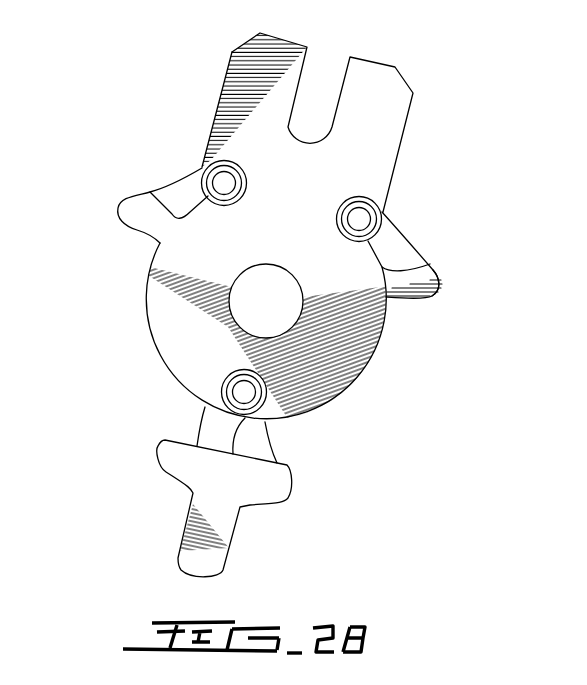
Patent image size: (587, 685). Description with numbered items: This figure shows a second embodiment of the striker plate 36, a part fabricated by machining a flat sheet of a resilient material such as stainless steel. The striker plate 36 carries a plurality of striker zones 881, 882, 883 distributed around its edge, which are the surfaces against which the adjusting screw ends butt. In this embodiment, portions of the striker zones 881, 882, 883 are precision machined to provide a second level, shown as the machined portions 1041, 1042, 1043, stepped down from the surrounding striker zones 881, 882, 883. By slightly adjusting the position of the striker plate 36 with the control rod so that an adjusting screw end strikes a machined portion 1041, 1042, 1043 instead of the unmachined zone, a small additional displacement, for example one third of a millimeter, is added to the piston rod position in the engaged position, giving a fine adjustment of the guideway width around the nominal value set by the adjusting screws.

The striker plate 36 is at (397, 378).
The first striker zone 881 is at (210, 422).
The second striker zone 882 is at (440, 287).
The third striker zone 883 is at (185, 192).
The first machined portion 1041 is at (255, 450).
The second machined portion 1042 is at (387, 240).
The third machined portion 1043 is at (152, 220).